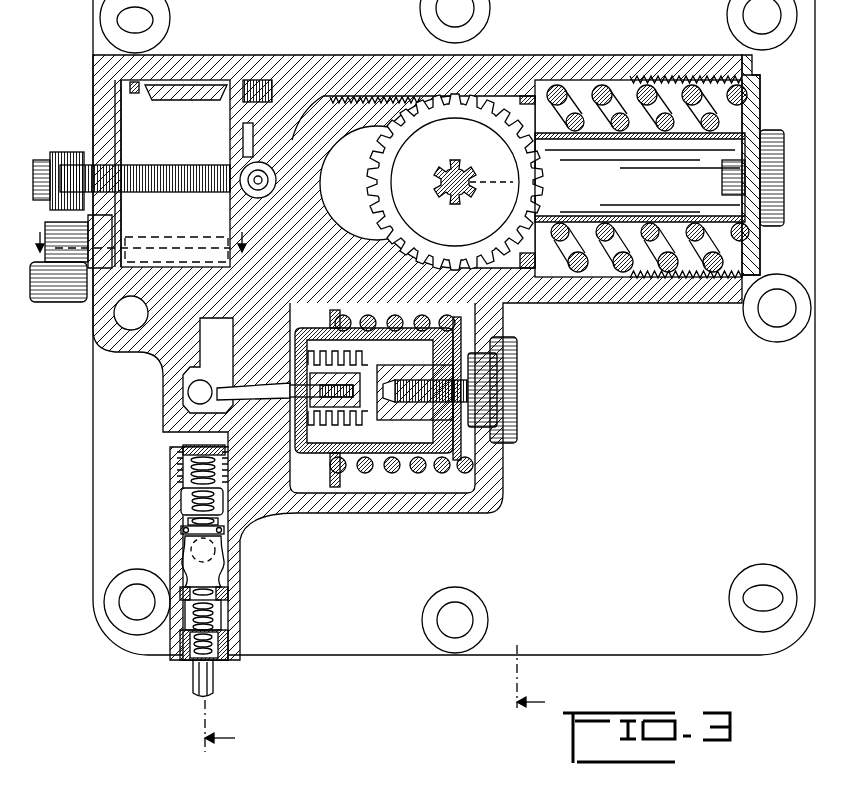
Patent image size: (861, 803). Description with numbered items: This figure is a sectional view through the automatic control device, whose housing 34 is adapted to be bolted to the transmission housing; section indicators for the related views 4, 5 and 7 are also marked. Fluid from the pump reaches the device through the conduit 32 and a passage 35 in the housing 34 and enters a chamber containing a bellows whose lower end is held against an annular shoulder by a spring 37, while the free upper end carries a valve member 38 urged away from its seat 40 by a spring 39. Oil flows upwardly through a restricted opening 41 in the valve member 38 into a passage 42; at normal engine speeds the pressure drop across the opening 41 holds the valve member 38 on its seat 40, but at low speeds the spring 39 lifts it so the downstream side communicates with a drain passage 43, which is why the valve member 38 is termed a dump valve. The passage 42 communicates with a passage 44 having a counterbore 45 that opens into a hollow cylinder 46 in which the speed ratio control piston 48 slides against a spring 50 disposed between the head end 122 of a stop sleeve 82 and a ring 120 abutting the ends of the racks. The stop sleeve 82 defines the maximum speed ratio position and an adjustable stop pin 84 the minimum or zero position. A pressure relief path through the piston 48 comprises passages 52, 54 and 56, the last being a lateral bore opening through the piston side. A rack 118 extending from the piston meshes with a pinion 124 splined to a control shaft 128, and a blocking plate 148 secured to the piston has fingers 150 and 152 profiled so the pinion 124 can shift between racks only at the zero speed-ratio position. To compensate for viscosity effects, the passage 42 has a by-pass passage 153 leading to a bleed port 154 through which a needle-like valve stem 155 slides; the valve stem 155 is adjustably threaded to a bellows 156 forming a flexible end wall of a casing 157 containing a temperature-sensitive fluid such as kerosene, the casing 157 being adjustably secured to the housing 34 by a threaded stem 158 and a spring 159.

The conduit 32 is at (193, 675).
The housing 34 is at (362, 508).
The passage 35 is at (200, 608).
The spring 37 is at (225, 628).
The valve member 38 is at (185, 530).
The spring 39 is at (177, 468).
The seat 40 is at (186, 520).
The restricted opening 41 is at (200, 548).
The passage 42 is at (190, 348).
The drain passage 43 is at (217, 551).
The passage 44 is at (157, 243).
The counterbore 45 is at (110, 230).
The hollow cylinder 46 is at (118, 117).
The speed ratio control piston 48 is at (183, 86).
The spring 50 is at (600, 90).
The passage 52 is at (247, 133).
The passage 54 is at (246, 141).
The passage 56 is at (263, 200).
The stop sleeve 82 is at (668, 80).
The stop pin 84 is at (147, 168).
The rack 118 is at (514, 96).
The ring 120 is at (547, 82).
The head end 122 is at (747, 90).
The pinion 124 is at (503, 158).
The control shaft 128 is at (447, 162).
The blocking plate 148 is at (327, 141).
The finger 150 is at (396, 107).
The finger 152 is at (410, 258).
The by-pass passage 153 is at (196, 393).
The bleed port 154 is at (240, 387).
The valve stem 155 is at (286, 395).
The bellows 156 is at (343, 412).
The casing 157 is at (312, 460).
The threaded stem 158 is at (503, 372).
The spring 159 is at (392, 460).
The section line 4 is at (531, 676).
The section line 5 is at (220, 726).
The section line 7 is at (143, 251).